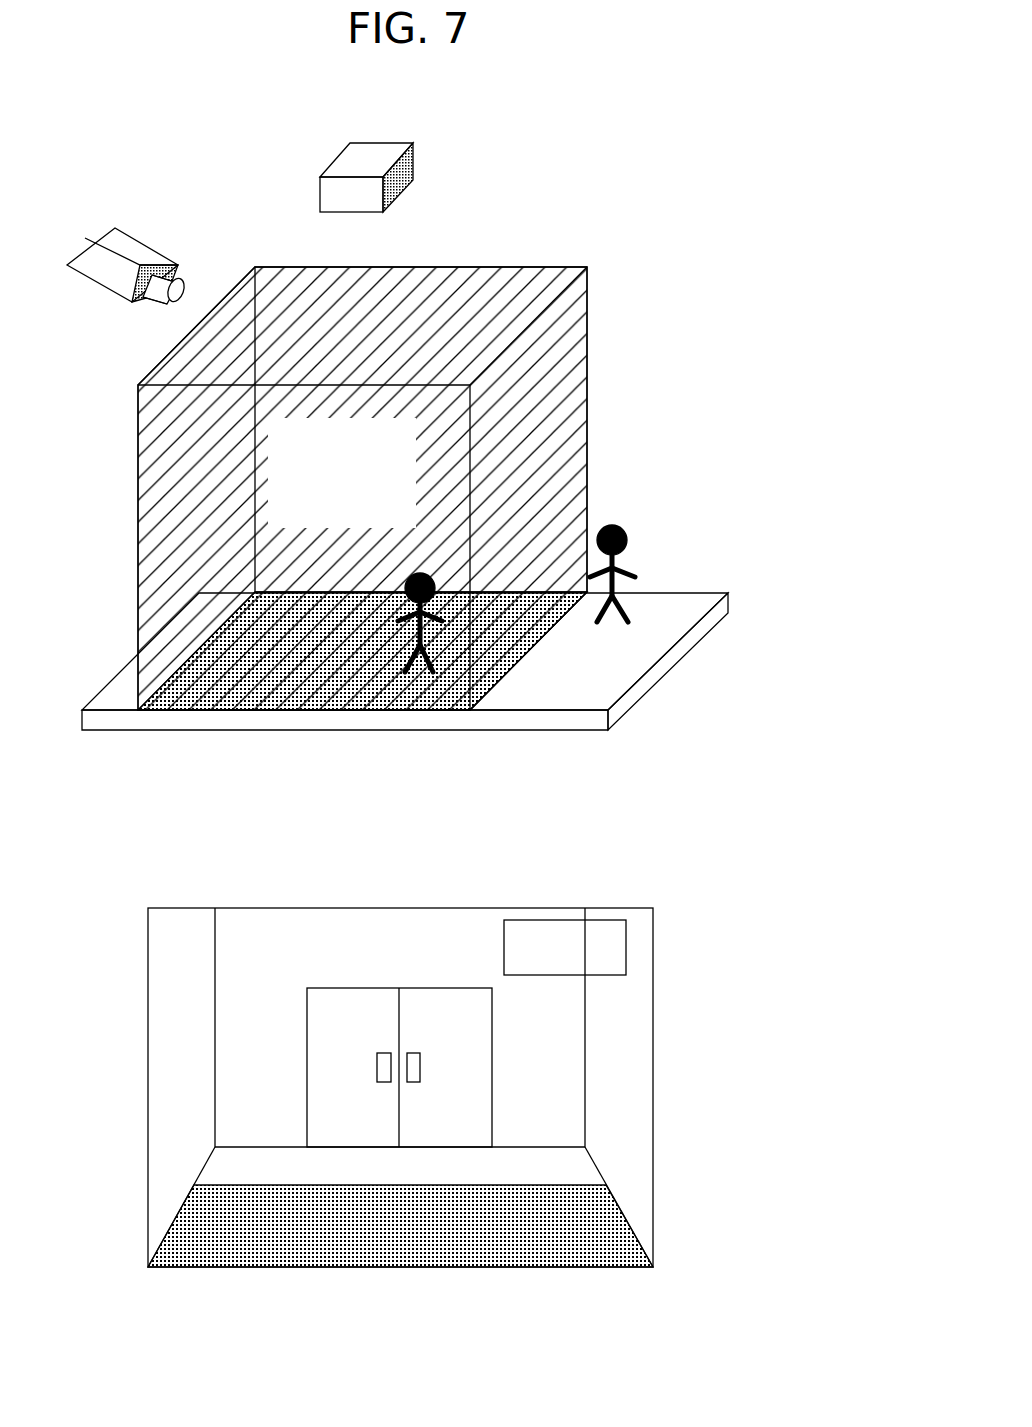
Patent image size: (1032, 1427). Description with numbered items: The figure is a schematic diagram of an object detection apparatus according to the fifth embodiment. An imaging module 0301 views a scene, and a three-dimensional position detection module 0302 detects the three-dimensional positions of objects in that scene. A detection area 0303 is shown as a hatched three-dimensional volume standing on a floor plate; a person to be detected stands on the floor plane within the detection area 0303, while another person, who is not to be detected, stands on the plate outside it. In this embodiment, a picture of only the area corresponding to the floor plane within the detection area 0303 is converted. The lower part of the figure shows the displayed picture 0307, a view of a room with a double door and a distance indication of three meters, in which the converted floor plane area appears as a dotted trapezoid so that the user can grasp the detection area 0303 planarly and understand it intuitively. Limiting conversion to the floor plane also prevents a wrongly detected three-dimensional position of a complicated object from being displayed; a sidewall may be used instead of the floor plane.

The imaging module 0301 is at (123, 240).
The three-dimensional position detection module 0302 is at (408, 190).
The detection area 0303 is at (467, 550).
The displayed picture 0307 is at (512, 1140).